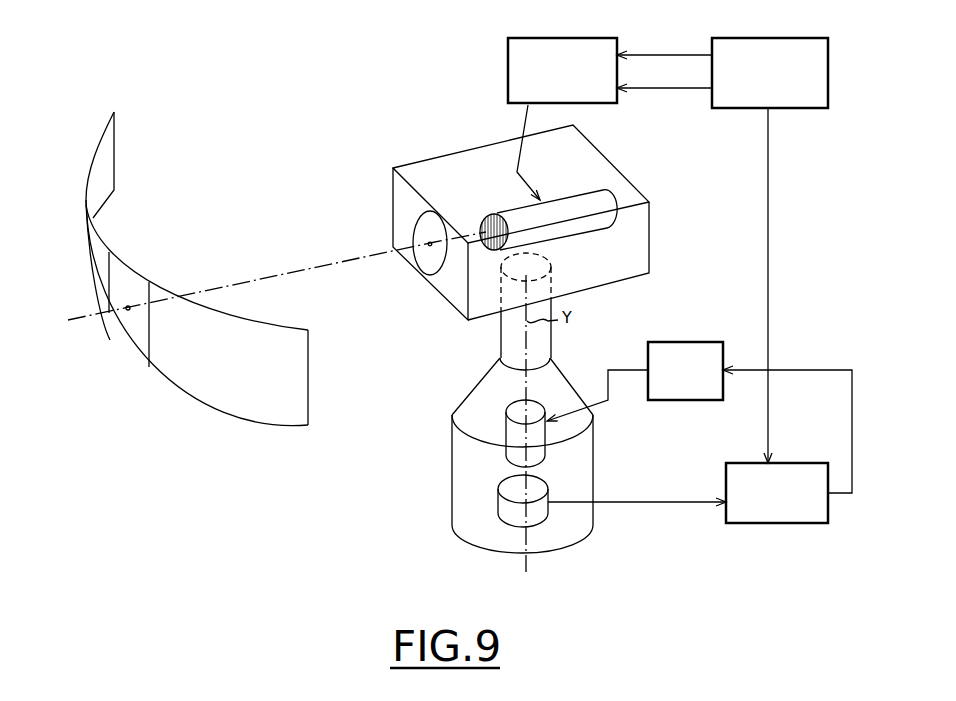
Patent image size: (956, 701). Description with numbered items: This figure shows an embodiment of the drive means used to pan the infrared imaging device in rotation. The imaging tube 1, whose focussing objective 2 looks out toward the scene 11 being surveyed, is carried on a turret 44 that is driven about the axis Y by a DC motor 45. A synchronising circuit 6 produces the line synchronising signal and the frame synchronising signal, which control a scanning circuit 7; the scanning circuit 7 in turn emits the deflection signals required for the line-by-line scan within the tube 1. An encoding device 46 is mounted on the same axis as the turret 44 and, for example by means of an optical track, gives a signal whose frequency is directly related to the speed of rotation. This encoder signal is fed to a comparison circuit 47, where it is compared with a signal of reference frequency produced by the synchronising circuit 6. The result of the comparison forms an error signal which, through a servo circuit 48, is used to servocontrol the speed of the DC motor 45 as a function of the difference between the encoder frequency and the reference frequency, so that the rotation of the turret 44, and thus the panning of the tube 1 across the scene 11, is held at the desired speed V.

The tube 1 is at (440, 170).
The focussing objective 2 is at (433, 277).
The synchronising circuit 6 is at (743, 108).
The scanning circuit 7 is at (508, 73).
The scene 11 is at (278, 331).
The turret 44 is at (500, 383).
The DC motor 45 is at (517, 440).
The encoding device 46 is at (510, 513).
The comparison circuit 47 is at (775, 525).
The circuit 48 is at (680, 402).